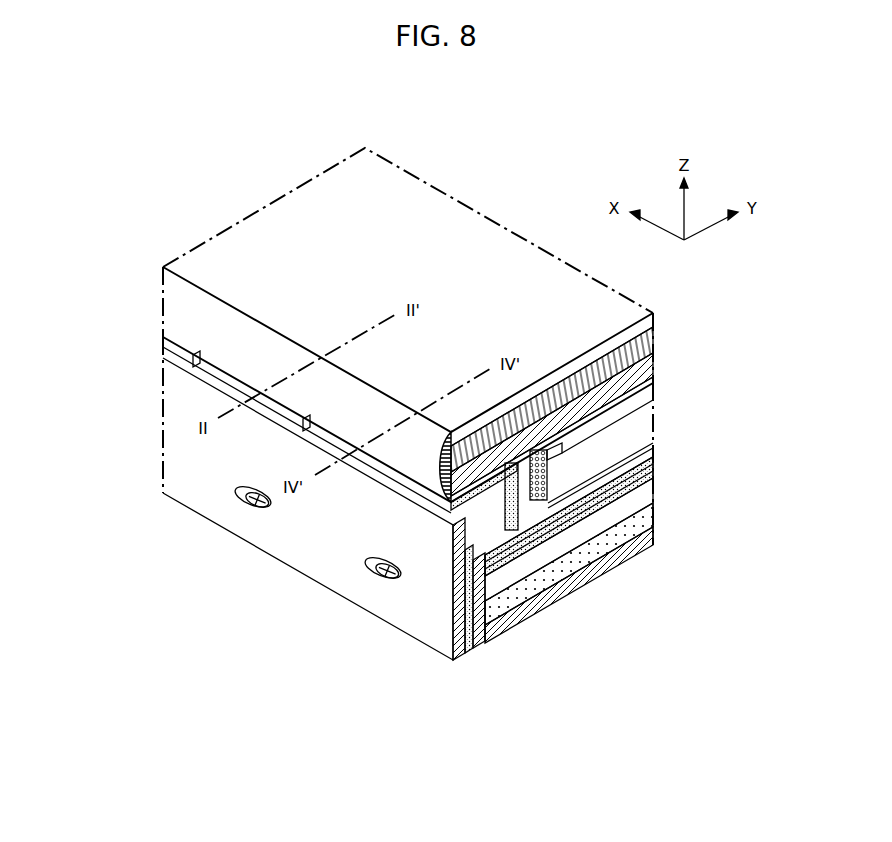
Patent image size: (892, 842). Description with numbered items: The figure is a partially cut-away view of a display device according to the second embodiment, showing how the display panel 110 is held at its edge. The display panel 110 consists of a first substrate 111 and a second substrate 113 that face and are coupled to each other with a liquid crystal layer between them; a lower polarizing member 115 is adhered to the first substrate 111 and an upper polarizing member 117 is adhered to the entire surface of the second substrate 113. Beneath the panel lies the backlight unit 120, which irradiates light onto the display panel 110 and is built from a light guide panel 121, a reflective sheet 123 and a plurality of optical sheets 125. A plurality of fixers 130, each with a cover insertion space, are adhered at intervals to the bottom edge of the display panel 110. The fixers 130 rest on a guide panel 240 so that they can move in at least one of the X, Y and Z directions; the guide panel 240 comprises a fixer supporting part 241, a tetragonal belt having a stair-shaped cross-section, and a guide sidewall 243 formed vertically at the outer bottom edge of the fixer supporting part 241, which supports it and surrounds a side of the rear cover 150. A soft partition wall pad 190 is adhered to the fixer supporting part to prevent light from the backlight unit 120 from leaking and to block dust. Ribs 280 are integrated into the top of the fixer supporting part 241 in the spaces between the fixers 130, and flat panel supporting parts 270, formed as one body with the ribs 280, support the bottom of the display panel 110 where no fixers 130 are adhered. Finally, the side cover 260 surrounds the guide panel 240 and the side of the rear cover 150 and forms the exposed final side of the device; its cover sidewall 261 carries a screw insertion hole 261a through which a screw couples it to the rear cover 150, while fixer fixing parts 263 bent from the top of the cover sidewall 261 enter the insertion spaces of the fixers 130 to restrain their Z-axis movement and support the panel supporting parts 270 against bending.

The display panel 110 is at (483, 325).
The first substrate 111 is at (653, 343).
The second substrate 113 is at (653, 365).
The lower polarizing member 115 is at (653, 388).
The upper polarizing member 117 is at (653, 325).
The backlight unit 120 is at (639, 504).
The light guide panel 121 is at (653, 495).
The reflective sheet 123 is at (612, 560).
The optical sheets 125 is at (653, 478).
The fixers 130 is at (205, 367).
The rear cover 150 is at (636, 554).
The partition wall pad 190 is at (548, 477).
The guide panel 240 is at (552, 575).
The fixer supporting part 241 is at (565, 487).
The guide sidewall 243 is at (470, 540).
The side cover 260 is at (314, 532).
The cover sidewall 261 is at (300, 550).
The screw insertion hole 261a is at (372, 573).
The fixer fixing parts 263 is at (455, 553).
The panel supporting parts 270 is at (508, 495).
The ribs 280 is at (523, 497).